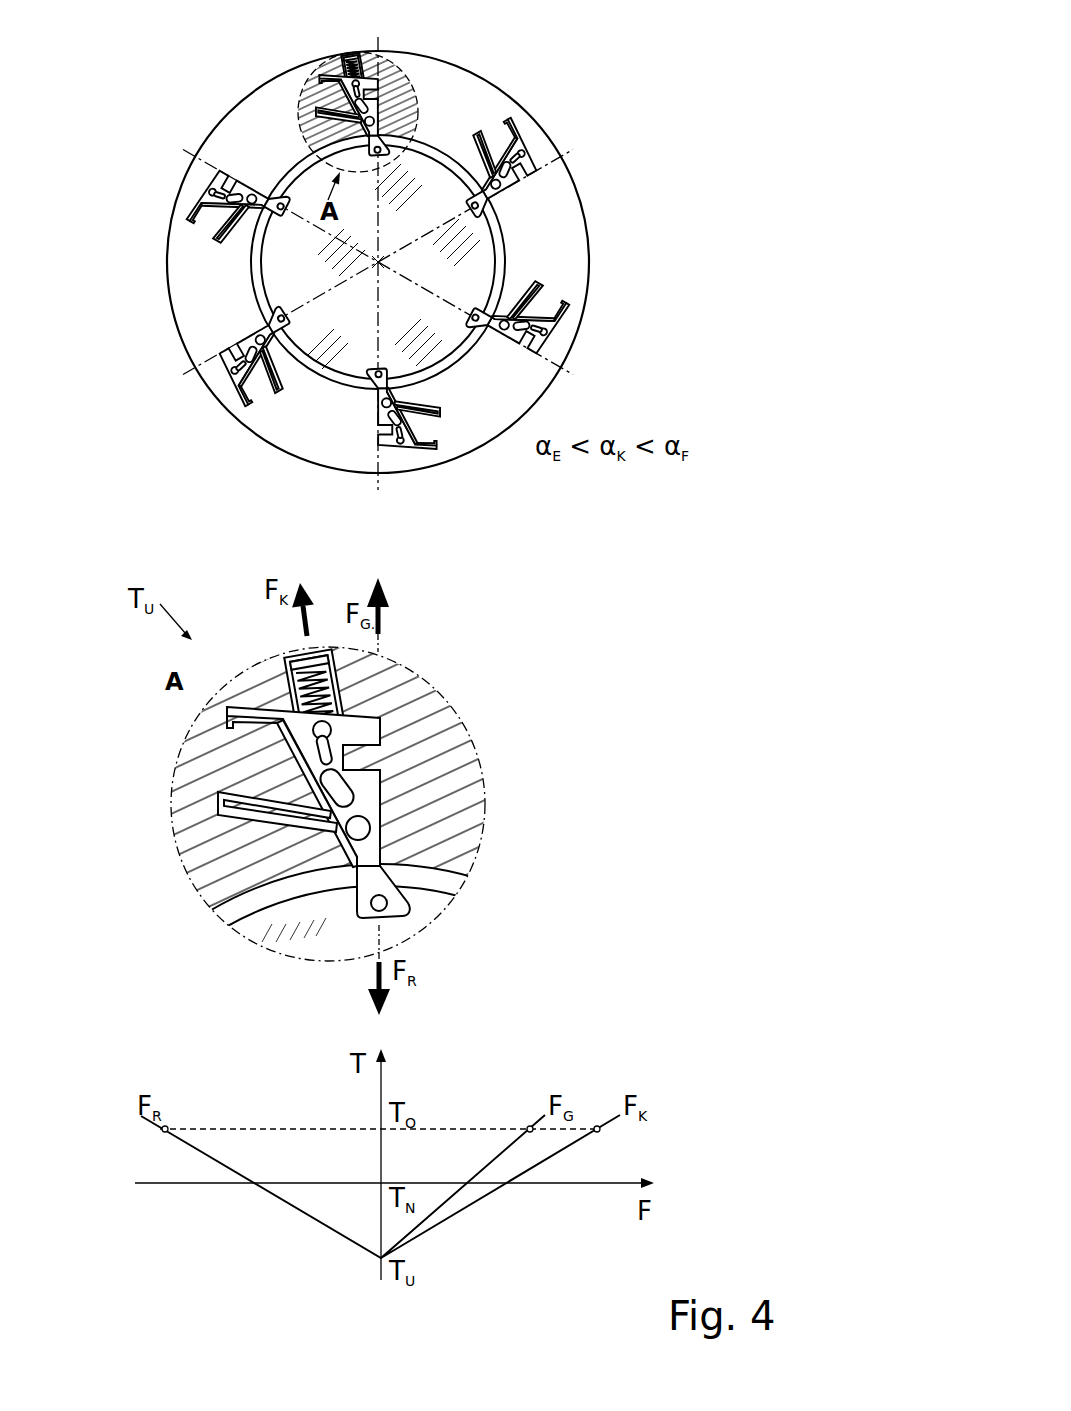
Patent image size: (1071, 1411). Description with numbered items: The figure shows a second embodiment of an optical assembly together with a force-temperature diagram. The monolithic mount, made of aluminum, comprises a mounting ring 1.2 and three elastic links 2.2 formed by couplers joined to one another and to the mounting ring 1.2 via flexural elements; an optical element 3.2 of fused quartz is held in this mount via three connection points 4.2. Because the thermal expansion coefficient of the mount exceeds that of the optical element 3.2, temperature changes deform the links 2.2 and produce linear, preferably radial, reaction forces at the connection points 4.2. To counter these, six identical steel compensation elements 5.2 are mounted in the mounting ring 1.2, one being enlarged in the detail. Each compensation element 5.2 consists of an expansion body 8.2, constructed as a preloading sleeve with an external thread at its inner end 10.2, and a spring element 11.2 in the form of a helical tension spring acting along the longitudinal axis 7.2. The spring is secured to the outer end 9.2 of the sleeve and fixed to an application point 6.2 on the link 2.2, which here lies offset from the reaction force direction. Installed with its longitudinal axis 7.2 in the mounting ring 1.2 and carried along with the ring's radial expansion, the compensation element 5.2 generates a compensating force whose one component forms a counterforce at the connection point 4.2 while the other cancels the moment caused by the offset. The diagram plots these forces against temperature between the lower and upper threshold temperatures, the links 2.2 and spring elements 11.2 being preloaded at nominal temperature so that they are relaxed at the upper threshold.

The mounting ring 1.2 is at (557, 256).
The elastic link 2.2 is at (553, 330).
The optical element 3.2 is at (470, 250).
The connection point 4.2 is at (385, 873).
The compensation element 5.2 is at (527, 420).
The application point 6.2 is at (340, 752).
The longitudinal axis 7.2 is at (408, 916).
The expansion body 8.2 is at (340, 684).
The outer end 9.2 is at (335, 668).
The inner end 10.2 is at (345, 695).
The spring element 11.2 is at (355, 712).